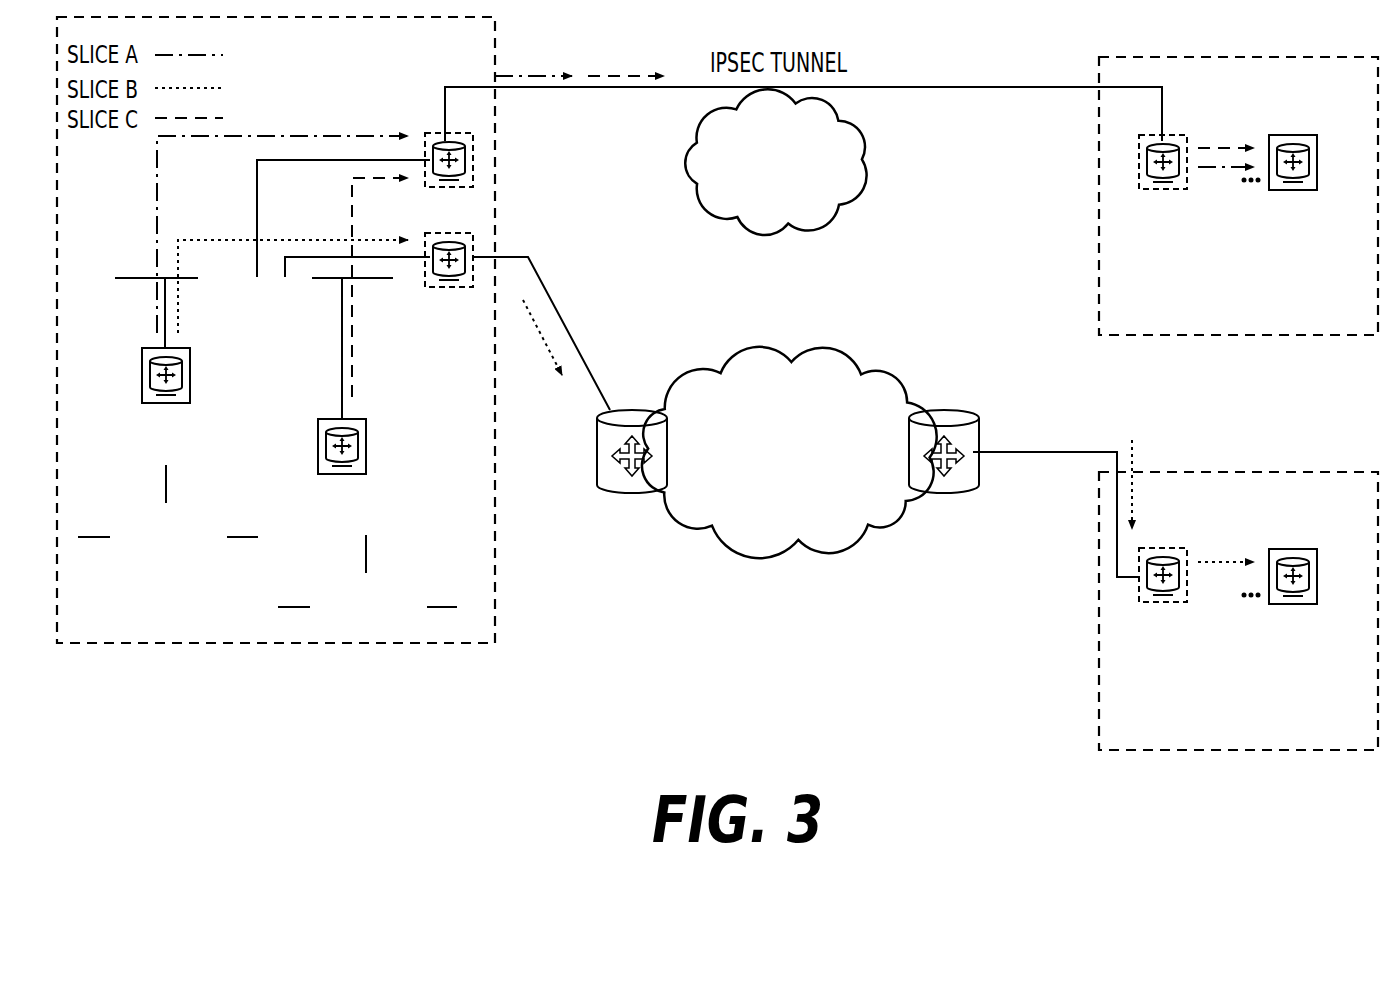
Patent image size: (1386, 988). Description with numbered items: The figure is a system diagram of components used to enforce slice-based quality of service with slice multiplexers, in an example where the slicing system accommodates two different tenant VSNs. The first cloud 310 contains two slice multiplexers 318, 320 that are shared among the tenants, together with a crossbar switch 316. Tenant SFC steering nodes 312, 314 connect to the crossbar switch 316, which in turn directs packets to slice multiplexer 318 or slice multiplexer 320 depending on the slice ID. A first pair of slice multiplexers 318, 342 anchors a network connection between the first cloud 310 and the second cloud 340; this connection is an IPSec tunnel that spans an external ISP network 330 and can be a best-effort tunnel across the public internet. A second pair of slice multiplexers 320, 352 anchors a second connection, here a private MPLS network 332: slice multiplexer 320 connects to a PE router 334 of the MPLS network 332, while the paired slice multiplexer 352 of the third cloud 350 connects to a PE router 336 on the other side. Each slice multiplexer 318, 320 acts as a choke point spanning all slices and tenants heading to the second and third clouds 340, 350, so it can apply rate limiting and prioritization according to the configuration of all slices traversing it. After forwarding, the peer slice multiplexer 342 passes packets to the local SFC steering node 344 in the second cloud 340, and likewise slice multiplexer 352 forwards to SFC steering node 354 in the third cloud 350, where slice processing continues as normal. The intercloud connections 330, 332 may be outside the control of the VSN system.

The first cloud 310 is at (110, 636).
The SFC steering node 312 is at (142, 378).
The tenant SFC steering (tenant 2) 314 is at (367, 448).
The crossbar switch 316 is at (250, 319).
The slice multiplexer 318 is at (473, 157).
The slice multiplexer 320 is at (473, 237).
The ISP network 330 is at (852, 152).
The MPLS network 332 is at (867, 385).
The PE router 334 is at (598, 478).
The PE router 336 is at (976, 490).
The second cloud 340 is at (1140, 329).
The peer slice multiplexer 342 is at (1175, 140).
The SFC steering node 344 is at (1298, 140).
The third cloud 350 is at (1140, 744).
The peer slice multiplexer 352 is at (1175, 553).
The SFC steering node 354 is at (1298, 553).